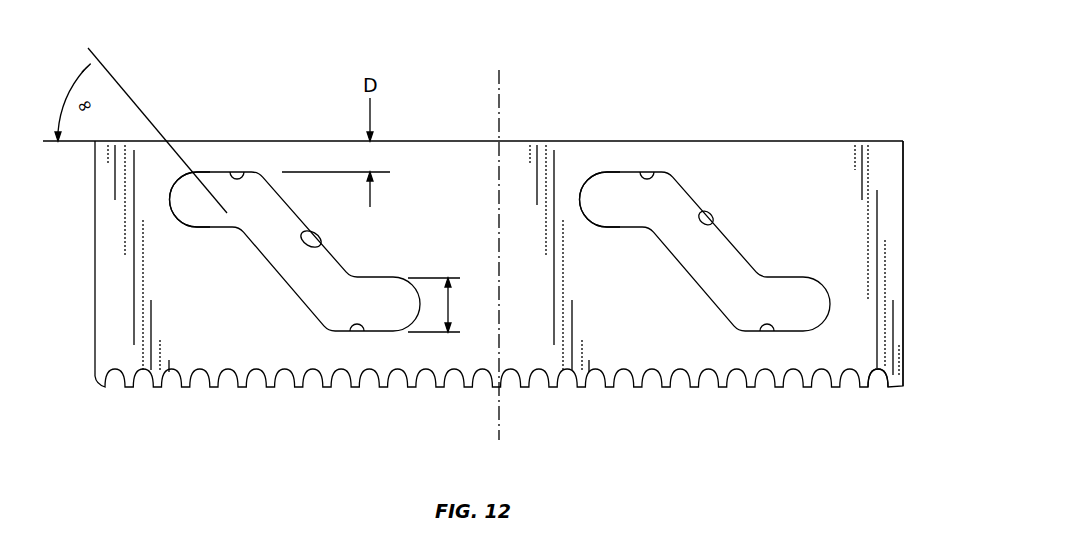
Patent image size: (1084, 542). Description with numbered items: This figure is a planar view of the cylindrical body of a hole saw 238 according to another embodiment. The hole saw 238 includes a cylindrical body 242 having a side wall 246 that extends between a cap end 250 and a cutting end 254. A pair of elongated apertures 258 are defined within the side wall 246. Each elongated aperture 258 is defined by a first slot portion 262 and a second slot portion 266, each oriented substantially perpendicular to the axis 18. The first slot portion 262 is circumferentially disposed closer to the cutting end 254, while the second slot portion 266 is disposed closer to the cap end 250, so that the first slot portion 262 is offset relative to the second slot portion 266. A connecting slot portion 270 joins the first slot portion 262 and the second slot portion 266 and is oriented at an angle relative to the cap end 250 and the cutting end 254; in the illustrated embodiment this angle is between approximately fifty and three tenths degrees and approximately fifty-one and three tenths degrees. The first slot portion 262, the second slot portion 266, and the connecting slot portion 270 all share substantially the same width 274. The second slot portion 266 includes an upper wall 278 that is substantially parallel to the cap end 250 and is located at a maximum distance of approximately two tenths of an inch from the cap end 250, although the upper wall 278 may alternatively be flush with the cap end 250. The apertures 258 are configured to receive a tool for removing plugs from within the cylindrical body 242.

The hole saw 238 is at (738, 67).
The axis 18 is at (500, 107).
The cylindrical body 242 is at (903, 201).
The side wall 246 is at (885, 163).
The cap end 250 is at (795, 141).
The cutting end 254 is at (868, 388).
The elongated aperture 258 is at (287, 290).
The first slot portion 262 is at (357, 326).
The second slot portion 266 is at (241, 174).
The connecting slot portion 270 is at (325, 242).
The width 274 is at (450, 305).
The upper wall 278 is at (213, 172).